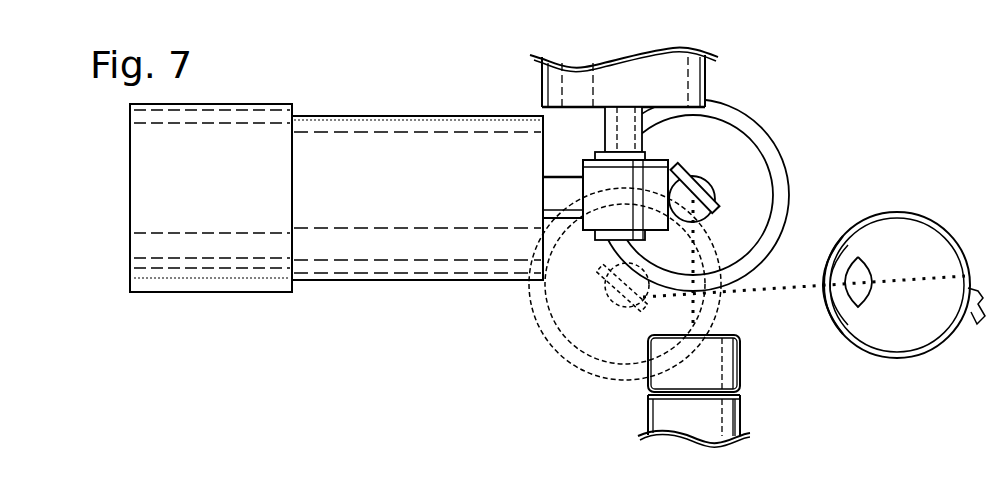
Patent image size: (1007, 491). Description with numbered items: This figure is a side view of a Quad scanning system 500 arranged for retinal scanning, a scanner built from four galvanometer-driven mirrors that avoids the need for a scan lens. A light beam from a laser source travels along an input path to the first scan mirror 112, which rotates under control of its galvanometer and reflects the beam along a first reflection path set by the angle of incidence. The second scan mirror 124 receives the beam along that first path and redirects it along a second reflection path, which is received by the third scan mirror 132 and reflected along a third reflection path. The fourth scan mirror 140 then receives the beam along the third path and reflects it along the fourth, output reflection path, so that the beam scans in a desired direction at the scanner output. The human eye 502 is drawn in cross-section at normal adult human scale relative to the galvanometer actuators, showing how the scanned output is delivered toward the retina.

The Quad scanning system 500 is at (385, 383).
The second scan mirror 124 is at (593, 155).
The third scan mirror 132 is at (587, 236).
The first scan mirror 112 is at (719, 201).
The fourth scan mirror 140 is at (648, 314).
The human eye 502 is at (898, 212).